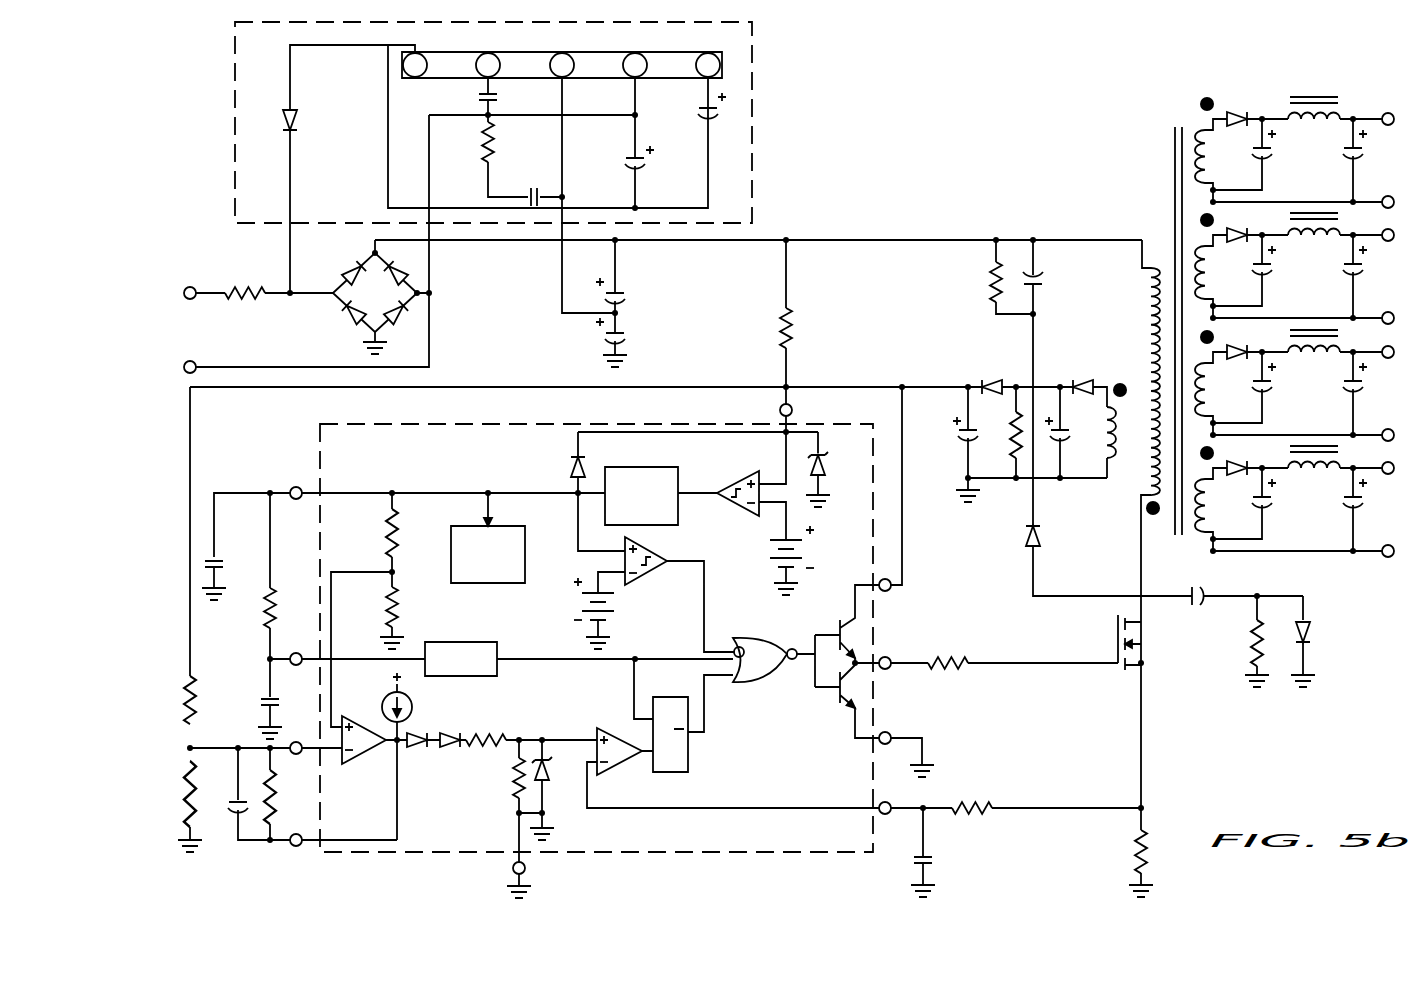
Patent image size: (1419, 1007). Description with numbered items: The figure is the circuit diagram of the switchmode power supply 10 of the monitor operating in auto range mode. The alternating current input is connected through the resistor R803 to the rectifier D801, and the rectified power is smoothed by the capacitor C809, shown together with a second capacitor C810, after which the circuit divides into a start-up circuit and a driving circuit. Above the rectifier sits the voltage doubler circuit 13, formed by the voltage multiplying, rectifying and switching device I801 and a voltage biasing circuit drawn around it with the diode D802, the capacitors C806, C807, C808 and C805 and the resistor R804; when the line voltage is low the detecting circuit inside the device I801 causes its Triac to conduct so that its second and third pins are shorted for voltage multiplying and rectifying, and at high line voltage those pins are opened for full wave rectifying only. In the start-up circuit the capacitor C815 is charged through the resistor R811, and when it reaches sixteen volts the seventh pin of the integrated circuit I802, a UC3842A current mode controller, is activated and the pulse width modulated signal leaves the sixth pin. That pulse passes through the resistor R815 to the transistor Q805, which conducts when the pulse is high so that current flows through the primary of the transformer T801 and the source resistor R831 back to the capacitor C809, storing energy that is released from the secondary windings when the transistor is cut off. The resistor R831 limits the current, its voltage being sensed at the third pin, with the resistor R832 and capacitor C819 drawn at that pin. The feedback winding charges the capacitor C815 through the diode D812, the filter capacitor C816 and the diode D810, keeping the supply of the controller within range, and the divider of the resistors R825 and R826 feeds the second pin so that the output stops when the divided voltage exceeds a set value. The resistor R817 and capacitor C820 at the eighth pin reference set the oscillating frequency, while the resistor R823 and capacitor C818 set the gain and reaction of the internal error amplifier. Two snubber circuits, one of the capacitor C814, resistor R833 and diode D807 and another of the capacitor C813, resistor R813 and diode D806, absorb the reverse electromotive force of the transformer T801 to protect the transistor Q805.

The switchmode power supply 10 is at (1050, 163).
The voltage doubler circuit 13 is at (752, 127).
The voltage multiplying, rectifying and switching device I801 is at (562, 54).
The integrated circuit I802 is at (667, 838).
The transformer T801 is at (1160, 449).
The transistor Q805 is at (1148, 642).
The rectifier D801 is at (375, 292).
The diode D802 is at (274, 109).
The resistor R803 is at (245, 281).
The capacitor C806 is at (490, 97).
The capacitor C807 is at (697, 126).
The capacitor C808 is at (622, 165).
The resistor R804 is at (466, 151).
The capacitor C805 is at (532, 165).
The capacitor C809 is at (631, 294).
The bulk capacitor C810 is at (631, 335).
The diode D810 is at (992, 376).
The diode D812 is at (1083, 376).
The resistor R825 is at (171, 694).
The resistor R826 is at (171, 794).
The resistor R811 is at (804, 328).
The resistor R817 is at (284, 596).
The capacitor C820 is at (252, 686).
The capacitor C818 is at (226, 795).
The resistor R823 is at (288, 793).
The resistor R815 is at (948, 650).
The current sense resistor R832 is at (972, 797).
The filter capacitor C819 is at (939, 847).
The resistor R831 is at (1119, 851).
The resistor R813 is at (976, 282).
The capacitor C813 is at (1053, 280).
The diode D806 is at (1013, 537).
The capacitor C814 is at (1233, 581).
The resistor R833 is at (1257, 668).
The diode D807 is at (1303, 669).
The capacitor C815 is at (951, 445).
The capacitor C816 is at (1072, 445).